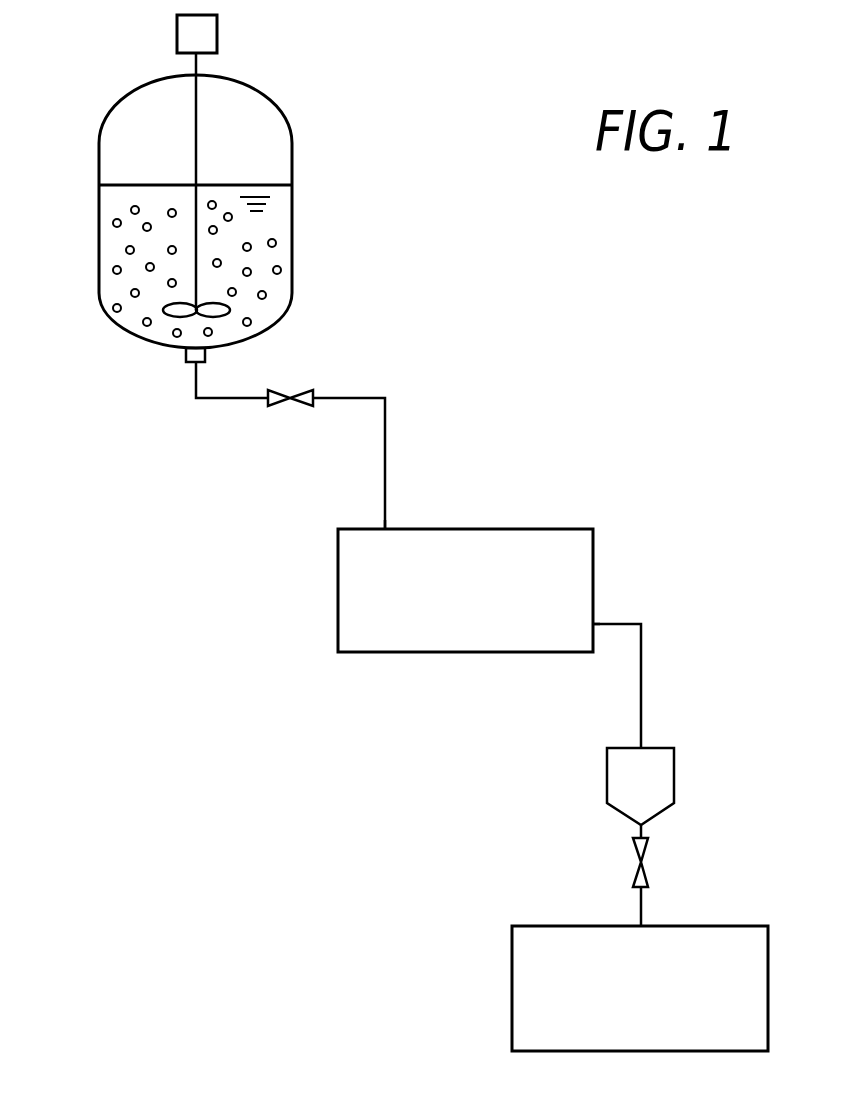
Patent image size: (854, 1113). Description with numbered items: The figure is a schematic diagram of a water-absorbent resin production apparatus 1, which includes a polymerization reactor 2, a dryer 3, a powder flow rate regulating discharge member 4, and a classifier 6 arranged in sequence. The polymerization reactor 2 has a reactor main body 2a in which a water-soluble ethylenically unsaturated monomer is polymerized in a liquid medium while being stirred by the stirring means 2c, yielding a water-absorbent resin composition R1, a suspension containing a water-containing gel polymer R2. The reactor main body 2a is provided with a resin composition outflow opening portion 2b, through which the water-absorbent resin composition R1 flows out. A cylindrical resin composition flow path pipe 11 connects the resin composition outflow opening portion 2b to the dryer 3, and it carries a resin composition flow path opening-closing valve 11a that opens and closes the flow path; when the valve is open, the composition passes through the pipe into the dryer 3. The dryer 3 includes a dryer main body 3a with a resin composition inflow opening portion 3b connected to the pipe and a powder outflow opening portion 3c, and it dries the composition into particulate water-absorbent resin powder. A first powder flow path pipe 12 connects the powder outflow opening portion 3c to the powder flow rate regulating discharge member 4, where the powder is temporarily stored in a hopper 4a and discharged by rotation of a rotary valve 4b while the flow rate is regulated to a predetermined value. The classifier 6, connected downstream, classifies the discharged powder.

The water-absorbent resin production apparatus 1 is at (465, 262).
The polymerization reactor 2 is at (300, 81).
The reactor main body 2a is at (294, 165).
The resin composition outflow opening portion 2b is at (188, 360).
The stirring means 2c is at (198, 146).
The water-absorbent resin composition R1 is at (282, 222).
The water-containing gel polymer R2 is at (112, 226).
The resin composition flow path pipe 11 is at (347, 398).
The resin composition flow path opening-closing valve 11a is at (273, 406).
The dryer 3 is at (602, 493).
The dryer main body 3a is at (511, 540).
The resin composition inflow opening portion 3b is at (386, 528).
The powder outflow opening portion 3c is at (594, 614).
The first powder flow path pipe 12 is at (642, 668).
The powder flow rate regulating discharge member 4 is at (702, 793).
The hopper 4a is at (616, 780).
The rotary valve 4b is at (637, 870).
The classifier 6 is at (715, 935).